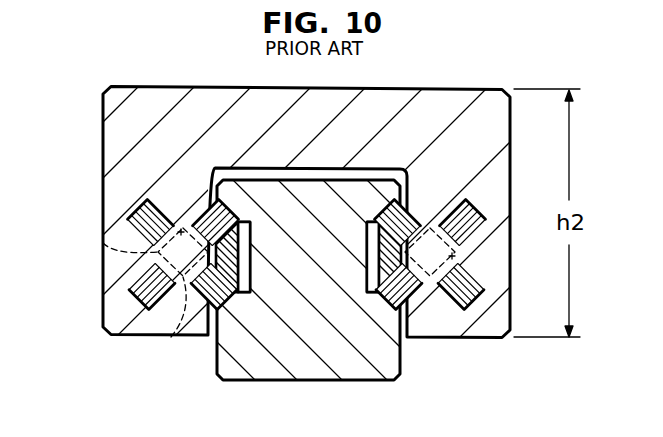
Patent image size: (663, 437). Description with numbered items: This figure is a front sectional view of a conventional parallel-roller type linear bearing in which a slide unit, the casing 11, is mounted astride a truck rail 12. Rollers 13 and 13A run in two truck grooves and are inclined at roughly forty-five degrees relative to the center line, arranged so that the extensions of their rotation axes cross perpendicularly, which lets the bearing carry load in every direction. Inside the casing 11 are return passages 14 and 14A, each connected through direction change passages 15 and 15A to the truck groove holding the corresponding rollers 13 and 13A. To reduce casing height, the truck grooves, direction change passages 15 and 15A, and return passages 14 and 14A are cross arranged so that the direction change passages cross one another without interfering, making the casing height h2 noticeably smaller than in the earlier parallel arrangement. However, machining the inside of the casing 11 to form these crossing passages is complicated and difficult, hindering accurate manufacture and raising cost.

The casing 11 is at (152, 113).
The truck rail 12 is at (373, 352).
The roller 13 is at (232, 213).
The roller 13A is at (222, 292).
The return passage 14 is at (127, 292).
The return passage 14A is at (132, 212).
The direction change passage 15 is at (171, 337).
The direction change passage 15A is at (103, 243).